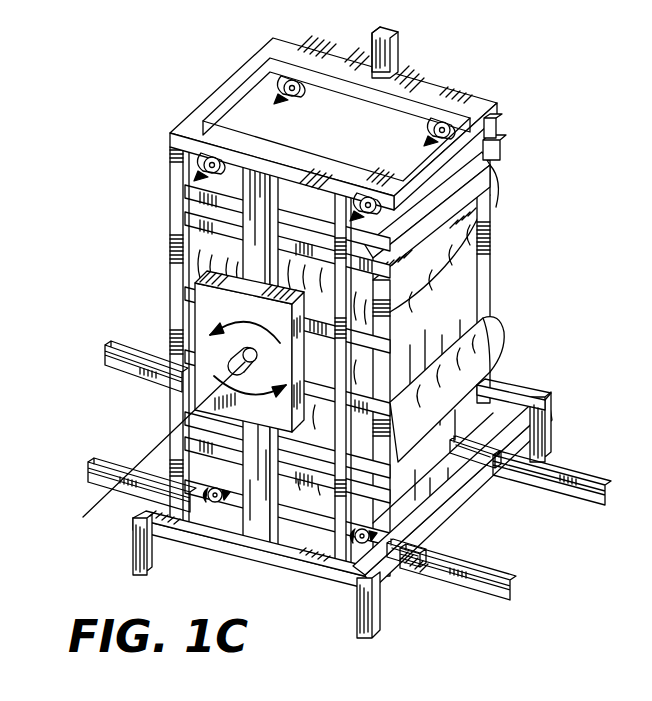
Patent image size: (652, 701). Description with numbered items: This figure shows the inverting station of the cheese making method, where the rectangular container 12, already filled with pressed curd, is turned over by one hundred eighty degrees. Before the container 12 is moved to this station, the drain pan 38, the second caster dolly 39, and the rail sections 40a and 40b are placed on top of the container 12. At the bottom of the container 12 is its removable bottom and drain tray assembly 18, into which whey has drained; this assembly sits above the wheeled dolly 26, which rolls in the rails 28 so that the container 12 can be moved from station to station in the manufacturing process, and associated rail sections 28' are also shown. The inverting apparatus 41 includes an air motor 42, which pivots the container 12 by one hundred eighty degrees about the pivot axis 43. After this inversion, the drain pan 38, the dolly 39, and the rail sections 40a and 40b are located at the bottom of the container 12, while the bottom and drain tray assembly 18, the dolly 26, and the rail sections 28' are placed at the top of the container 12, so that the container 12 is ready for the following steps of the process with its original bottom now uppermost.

The rectangular container 12 is at (495, 263).
The bottom and drain tray assembly 18 is at (485, 381).
The wheeled dolly 26 is at (393, 499).
The rails 28 is at (326, 470).
The rail sections 28' is at (443, 532).
The drain pan 38 is at (485, 160).
The second caster dolly 39 is at (484, 130).
The rail section 40a is at (339, 164).
The rail section 40b is at (416, 78).
The inverting apparatus 41 is at (162, 240).
The air motor 42 is at (212, 305).
The pivot axis 43 is at (157, 447).